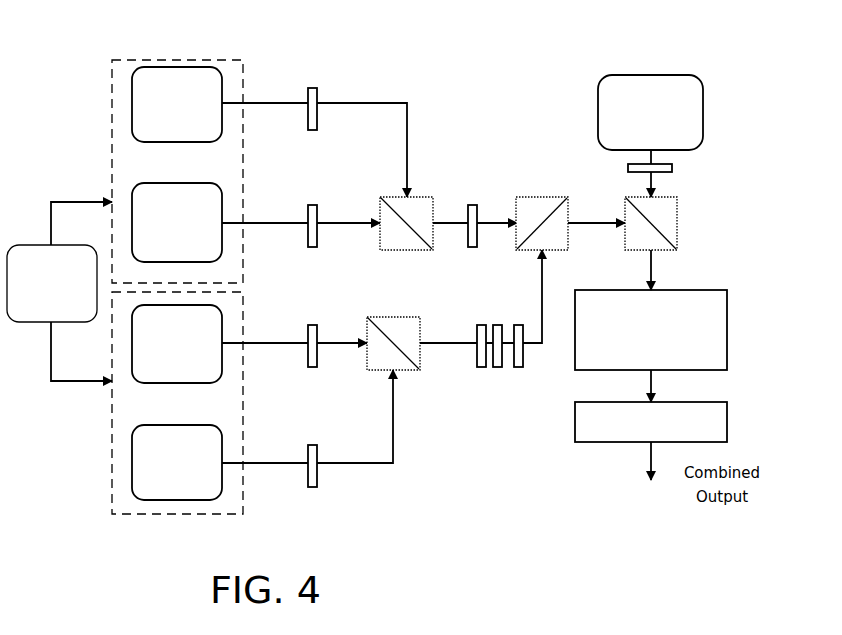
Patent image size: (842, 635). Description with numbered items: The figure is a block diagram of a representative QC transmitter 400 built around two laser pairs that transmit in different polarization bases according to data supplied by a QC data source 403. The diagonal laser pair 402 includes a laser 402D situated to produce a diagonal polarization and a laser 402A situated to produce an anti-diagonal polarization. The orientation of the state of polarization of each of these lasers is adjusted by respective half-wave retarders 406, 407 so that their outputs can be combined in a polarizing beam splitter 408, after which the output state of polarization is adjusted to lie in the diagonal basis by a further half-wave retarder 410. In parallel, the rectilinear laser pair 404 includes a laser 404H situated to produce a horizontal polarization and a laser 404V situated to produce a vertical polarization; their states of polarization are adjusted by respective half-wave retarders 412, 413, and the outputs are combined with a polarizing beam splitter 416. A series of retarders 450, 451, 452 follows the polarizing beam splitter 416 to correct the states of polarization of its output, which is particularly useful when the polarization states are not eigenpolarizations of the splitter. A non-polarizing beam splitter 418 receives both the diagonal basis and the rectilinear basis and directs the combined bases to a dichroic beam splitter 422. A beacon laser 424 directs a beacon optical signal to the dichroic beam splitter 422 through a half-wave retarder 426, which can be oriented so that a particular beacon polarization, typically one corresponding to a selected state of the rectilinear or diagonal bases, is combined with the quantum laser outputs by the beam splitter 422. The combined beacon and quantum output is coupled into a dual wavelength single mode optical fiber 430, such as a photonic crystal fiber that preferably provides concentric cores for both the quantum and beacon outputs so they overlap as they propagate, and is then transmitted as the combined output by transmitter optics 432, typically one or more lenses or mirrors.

The QC transmitter 400 is at (473, 493).
The diagonal laser pair 402 is at (243, 60).
The laser 402A is at (177, 104).
The laser 402D is at (177, 222).
The QC data source 403 is at (52, 283).
The rectilinear laser pair 404 is at (112, 503).
The laser 404H is at (177, 344).
The laser 404V is at (177, 462).
The λ/2 retarder 406 is at (317, 92).
The λ/2 retarder 407 is at (317, 209).
The polarizing beam splitter 408 is at (421, 197).
The λ/2 retarder 410 is at (476, 246).
The λ/2 retarder 412 is at (307, 360).
The λ/2 retarder 413 is at (307, 476).
The polarizing beam splitter 416 is at (412, 368).
The non-polarizing beam splitter 418 is at (520, 197).
The dichroic beam splitter 422 is at (677, 228).
The beacon laser 424 is at (650, 112).
The λ/2 retarder 426 is at (672, 167).
The dual wavelength single mode optical fiber 430 is at (651, 330).
The transmitter optics 432 is at (651, 422).
The retarder 450 is at (474, 368).
The retarder 451 is at (497, 326).
The retarder 452 is at (522, 360).